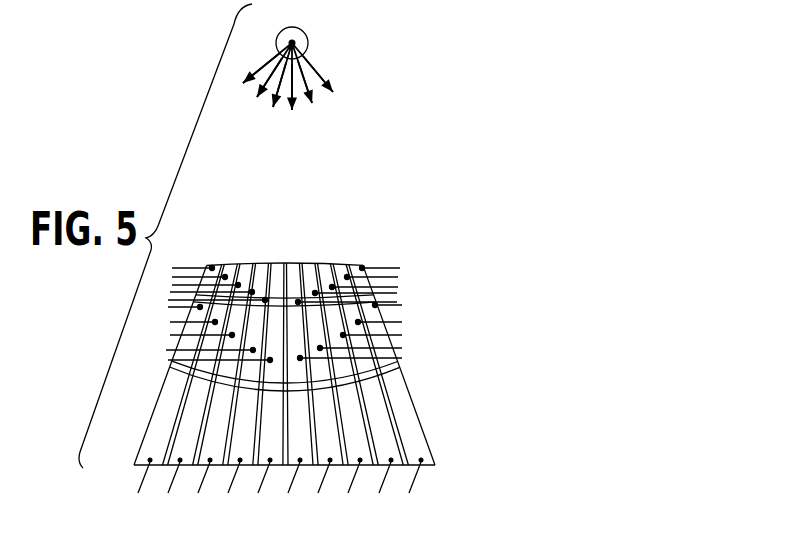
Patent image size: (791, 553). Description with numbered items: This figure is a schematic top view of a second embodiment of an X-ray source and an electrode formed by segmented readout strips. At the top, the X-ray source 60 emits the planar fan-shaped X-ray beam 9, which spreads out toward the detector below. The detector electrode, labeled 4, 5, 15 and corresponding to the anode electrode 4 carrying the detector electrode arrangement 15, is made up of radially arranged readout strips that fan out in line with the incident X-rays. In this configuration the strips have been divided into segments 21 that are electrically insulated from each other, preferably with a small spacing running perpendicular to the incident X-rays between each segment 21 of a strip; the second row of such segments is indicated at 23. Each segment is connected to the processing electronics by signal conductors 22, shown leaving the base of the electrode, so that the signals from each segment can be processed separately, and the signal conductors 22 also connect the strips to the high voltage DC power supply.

The X-ray source 60 is at (305, 36).
The planar X-ray beam 9 is at (319, 65).
The anode electrode 4 is at (308, 353).
The detector array 5 is at (308, 353).
The detector electrode arrangement 15 is at (308, 353).
The segment 21 is at (321, 392).
The detector elements of second row 23 is at (277, 378).
The signal conductor 22 is at (406, 356).